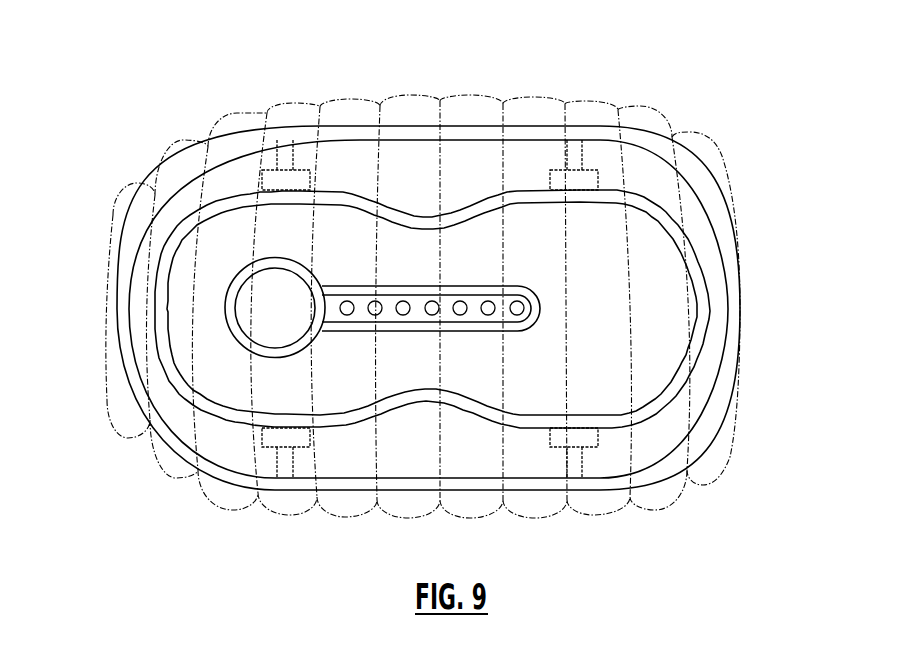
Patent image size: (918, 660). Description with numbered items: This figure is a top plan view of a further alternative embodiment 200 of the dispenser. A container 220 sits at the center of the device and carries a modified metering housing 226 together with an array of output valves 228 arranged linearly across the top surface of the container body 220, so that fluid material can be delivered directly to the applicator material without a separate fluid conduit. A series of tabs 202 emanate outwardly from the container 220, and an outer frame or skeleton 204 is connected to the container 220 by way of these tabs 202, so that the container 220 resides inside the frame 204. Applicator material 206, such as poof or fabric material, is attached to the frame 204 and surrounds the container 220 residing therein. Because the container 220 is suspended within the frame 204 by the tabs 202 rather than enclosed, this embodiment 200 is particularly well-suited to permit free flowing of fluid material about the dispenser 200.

The alternative embodiment 200 is at (738, 155).
The tabs 202 is at (262, 435).
The outer frame or skeleton 204 is at (703, 423).
The applicator material 206 is at (172, 423).
The container 220 is at (535, 168).
The metering housing 226 is at (319, 260).
The output valves 228 is at (404, 304).